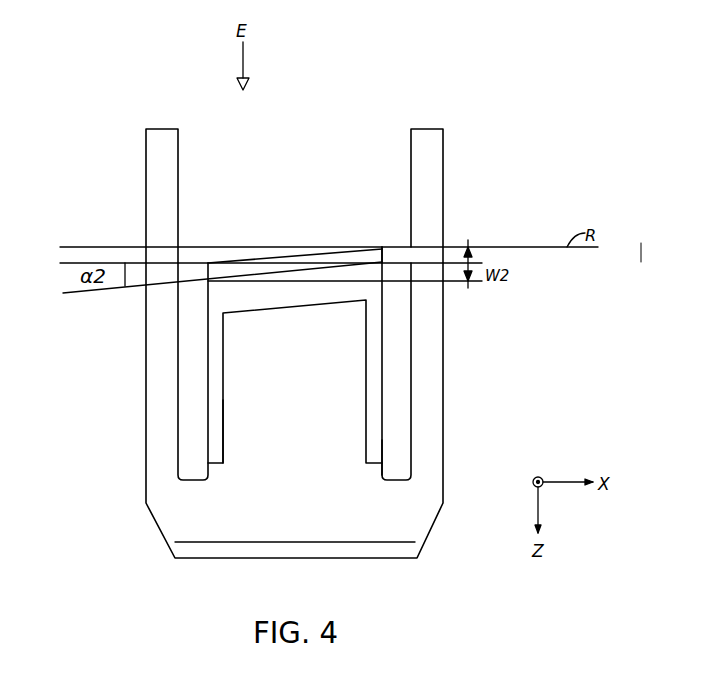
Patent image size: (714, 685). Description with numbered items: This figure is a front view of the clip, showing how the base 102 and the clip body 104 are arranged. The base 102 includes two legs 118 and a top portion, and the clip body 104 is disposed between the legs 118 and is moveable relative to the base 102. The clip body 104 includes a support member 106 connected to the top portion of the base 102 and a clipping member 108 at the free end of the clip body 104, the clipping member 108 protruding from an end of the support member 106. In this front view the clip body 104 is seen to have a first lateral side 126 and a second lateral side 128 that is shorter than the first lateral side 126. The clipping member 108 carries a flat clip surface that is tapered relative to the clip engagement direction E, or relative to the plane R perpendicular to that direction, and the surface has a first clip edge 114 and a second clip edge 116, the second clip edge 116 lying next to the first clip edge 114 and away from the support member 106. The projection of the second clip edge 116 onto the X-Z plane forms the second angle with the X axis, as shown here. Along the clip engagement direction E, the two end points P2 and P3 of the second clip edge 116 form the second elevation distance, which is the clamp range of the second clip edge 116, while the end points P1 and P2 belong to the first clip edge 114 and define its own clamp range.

The base 102 is at (146, 428).
The clip body 104 is at (384, 423).
The support member 106 is at (248, 418).
The clipping member 108 is at (273, 298).
The first clip edge 114 is at (408, 248).
The second clip edge 116 is at (320, 270).
The legs 118 is at (165, 148).
The first lateral side 126 is at (373, 368).
The second lateral side 128 is at (212, 386).
The end point P1 is at (397, 255).
The end point P2 is at (383, 263).
The end point P3 is at (198, 280).